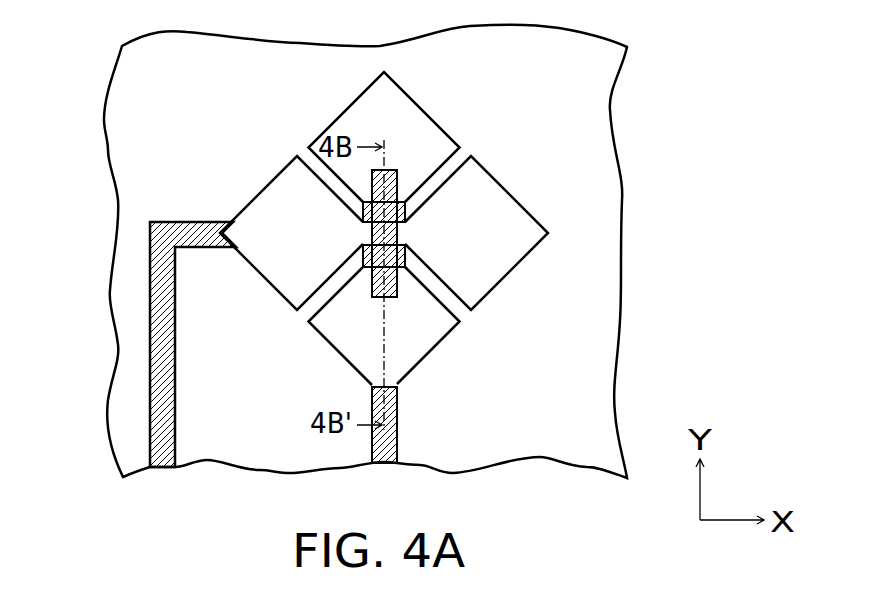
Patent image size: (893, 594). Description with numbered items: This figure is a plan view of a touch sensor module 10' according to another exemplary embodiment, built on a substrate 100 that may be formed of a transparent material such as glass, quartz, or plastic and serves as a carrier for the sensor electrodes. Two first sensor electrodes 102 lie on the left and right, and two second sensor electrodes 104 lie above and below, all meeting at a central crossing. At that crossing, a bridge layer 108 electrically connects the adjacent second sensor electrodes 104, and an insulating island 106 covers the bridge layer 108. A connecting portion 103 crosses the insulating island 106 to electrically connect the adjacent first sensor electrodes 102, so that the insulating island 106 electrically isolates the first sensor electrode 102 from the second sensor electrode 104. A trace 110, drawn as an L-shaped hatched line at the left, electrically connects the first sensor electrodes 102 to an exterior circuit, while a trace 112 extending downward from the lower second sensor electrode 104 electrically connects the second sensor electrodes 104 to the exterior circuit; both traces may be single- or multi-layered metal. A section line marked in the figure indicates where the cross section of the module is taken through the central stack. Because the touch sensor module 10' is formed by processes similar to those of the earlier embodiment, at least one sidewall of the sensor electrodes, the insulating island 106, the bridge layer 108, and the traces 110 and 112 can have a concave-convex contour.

The touch sensor module 10' is at (704, 36).
The substrate 100 is at (580, 77).
The first sensor electrode 102 is at (282, 203).
The connecting portion 103 is at (360, 233).
The second sensor electrode 104 is at (357, 122).
The insulating island 106 is at (397, 197).
The bridge layer 108 is at (384, 170).
The trace 110 is at (152, 371).
The trace 112 is at (390, 443).